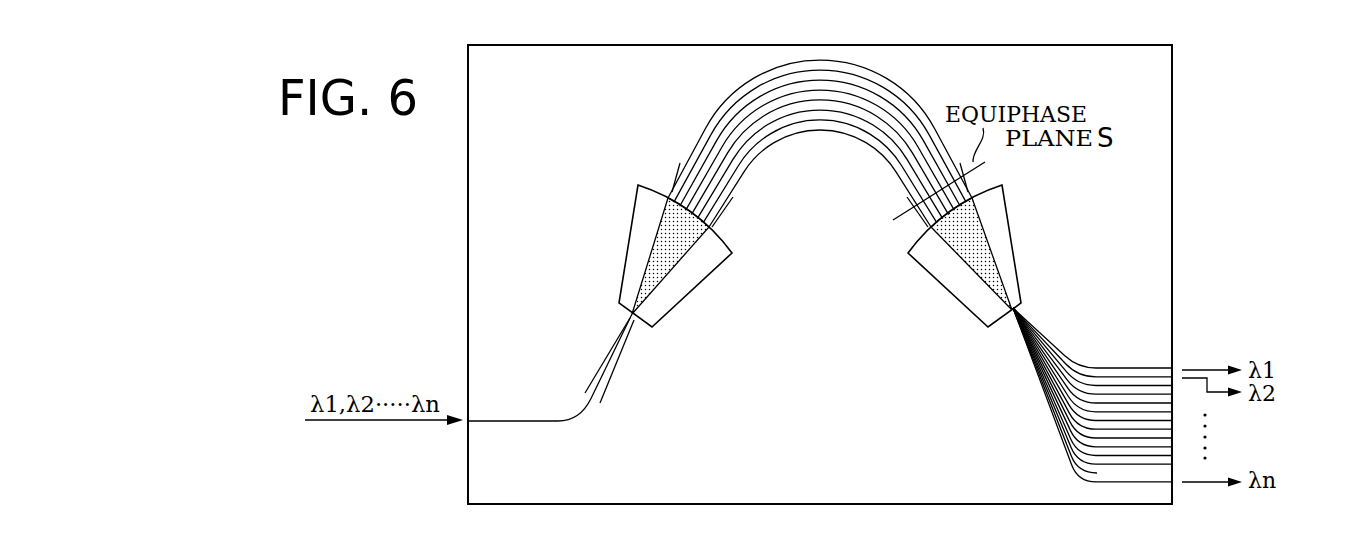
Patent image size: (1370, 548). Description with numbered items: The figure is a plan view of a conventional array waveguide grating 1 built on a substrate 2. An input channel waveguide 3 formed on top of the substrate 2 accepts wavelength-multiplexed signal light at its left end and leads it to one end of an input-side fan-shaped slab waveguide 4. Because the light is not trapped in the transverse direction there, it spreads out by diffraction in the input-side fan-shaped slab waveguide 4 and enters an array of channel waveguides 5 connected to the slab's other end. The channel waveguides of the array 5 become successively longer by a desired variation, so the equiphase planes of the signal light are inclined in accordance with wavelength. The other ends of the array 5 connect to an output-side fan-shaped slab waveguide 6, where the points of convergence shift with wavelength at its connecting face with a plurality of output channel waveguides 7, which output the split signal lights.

The array waveguide grating 1 is at (1215, 108).
The substrate 2 is at (467, 196).
The input channel waveguide 3 is at (518, 421).
The input-side fan-shaped slab waveguide 4 is at (640, 238).
The array of channel waveguides 5 is at (820, 147).
The output-side fan-shaped slab waveguide 6 is at (1005, 233).
The output channel waveguides 7 is at (1138, 362).